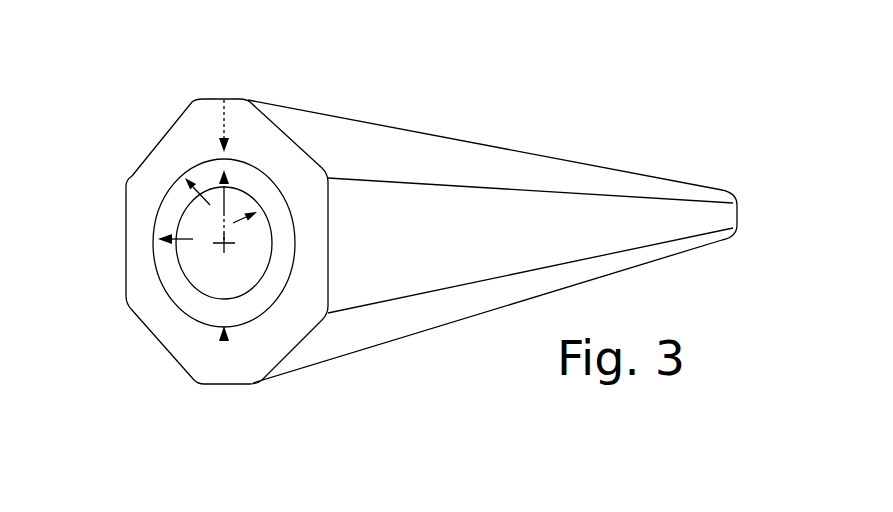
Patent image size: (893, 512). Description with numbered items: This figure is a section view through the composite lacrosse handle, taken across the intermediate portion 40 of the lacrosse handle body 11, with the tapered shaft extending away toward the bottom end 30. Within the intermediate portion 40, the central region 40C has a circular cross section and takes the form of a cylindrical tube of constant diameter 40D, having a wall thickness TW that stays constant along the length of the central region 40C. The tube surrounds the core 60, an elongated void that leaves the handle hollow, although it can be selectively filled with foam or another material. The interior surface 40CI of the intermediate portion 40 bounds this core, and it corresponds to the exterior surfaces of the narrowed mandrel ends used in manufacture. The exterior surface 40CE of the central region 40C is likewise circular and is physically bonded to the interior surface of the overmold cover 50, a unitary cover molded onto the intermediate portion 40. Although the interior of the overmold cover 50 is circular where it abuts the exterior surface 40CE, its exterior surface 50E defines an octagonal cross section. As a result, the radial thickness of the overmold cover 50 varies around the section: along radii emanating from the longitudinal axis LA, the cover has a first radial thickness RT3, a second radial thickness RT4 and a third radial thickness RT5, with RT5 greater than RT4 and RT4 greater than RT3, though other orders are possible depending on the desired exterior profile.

The intermediate portion 40 is at (441, 108).
The overmold cover 50 is at (520, 148).
The bottom end 30 is at (725, 238).
The exterior surface of the overmold cover 50E is at (300, 148).
The lacrosse handle body 11 is at (165, 263).
The core 60 is at (197, 282).
The wall thickness TW is at (301, 191).
The interior surface of the intermediate portion 40CI is at (178, 227).
The longitudinal axis LA is at (223, 250).
The third radial thickness RT5 is at (224, 86).
The second radial thickness RT4 is at (145, 134).
The first radial thickness RT3 is at (111, 240).
The constant diameter 40D is at (224, 341).
The central region 40C is at (260, 317).
The exterior surface of the central region 40CE is at (283, 292).